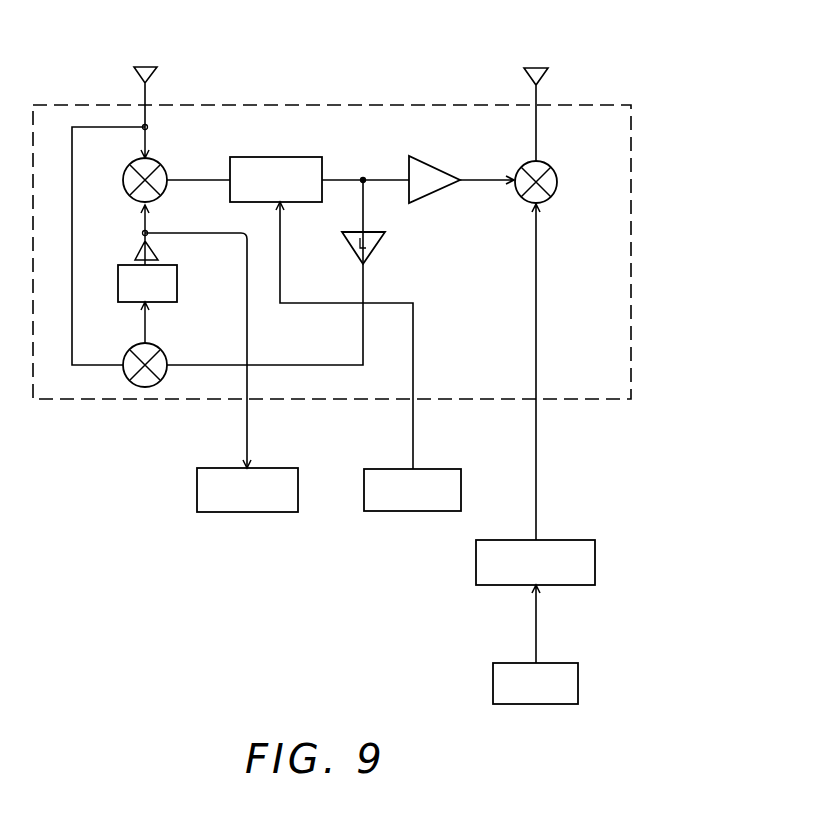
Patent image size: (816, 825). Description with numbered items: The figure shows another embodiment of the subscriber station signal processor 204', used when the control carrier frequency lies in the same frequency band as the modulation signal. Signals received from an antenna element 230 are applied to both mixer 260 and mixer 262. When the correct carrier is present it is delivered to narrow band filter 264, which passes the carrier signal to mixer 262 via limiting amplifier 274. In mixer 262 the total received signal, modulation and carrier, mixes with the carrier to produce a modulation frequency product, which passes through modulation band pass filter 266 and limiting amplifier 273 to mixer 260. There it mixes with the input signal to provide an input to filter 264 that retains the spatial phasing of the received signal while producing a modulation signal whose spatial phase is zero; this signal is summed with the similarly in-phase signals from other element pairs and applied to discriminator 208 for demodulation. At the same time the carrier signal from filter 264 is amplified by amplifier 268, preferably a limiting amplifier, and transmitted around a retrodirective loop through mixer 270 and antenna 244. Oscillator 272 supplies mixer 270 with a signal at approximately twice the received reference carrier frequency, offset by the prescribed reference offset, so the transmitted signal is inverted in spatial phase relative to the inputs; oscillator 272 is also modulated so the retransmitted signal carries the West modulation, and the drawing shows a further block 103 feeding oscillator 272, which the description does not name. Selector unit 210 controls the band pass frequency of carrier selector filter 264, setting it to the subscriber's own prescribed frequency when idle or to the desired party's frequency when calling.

The signal processor 204' is at (368, 252).
The antenna element 230 is at (163, 48).
The antenna 244 is at (547, 52).
The mixer 260 is at (137, 200).
The mixer 262 is at (162, 352).
The narrow band filter 264 is at (300, 148).
The modulation band pass filter 266 is at (178, 290).
The amplifier 268 is at (430, 192).
The mixer 270 is at (552, 188).
The limiting amplifier 273 is at (160, 253).
The limiting amplifier 274 is at (378, 244).
The discriminator 208 is at (197, 490).
The selector unit 210 is at (458, 497).
The oscillator 272 is at (577, 566).
The reference source 103 is at (578, 688).